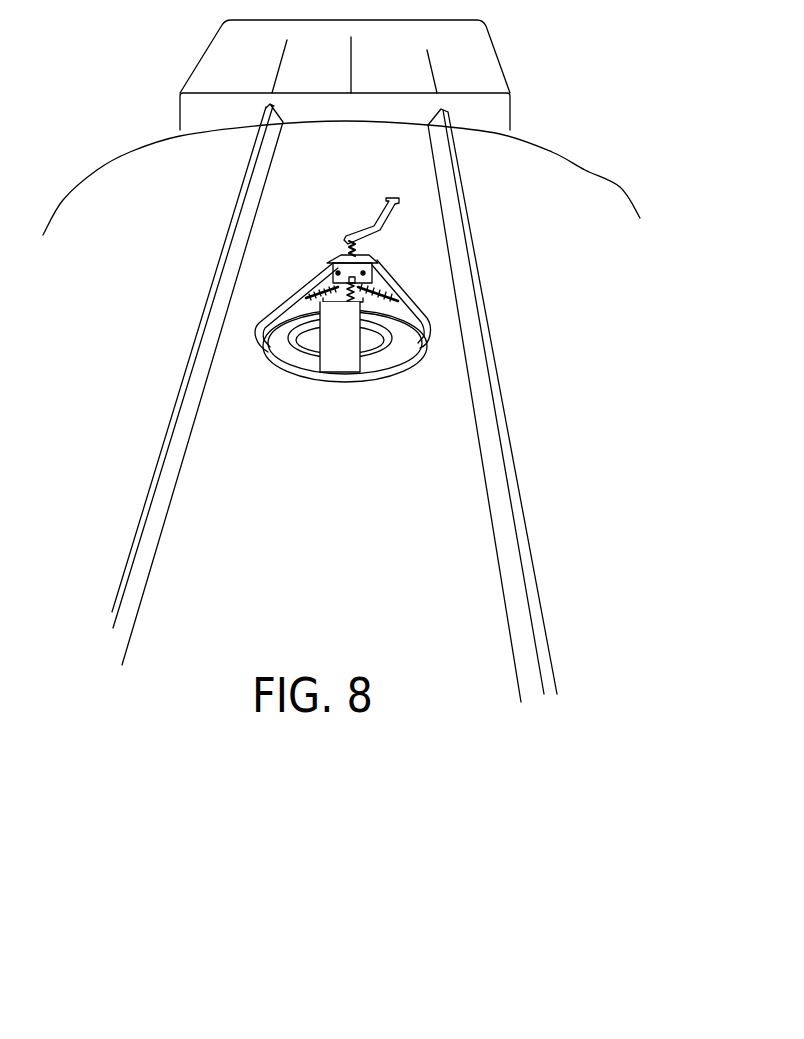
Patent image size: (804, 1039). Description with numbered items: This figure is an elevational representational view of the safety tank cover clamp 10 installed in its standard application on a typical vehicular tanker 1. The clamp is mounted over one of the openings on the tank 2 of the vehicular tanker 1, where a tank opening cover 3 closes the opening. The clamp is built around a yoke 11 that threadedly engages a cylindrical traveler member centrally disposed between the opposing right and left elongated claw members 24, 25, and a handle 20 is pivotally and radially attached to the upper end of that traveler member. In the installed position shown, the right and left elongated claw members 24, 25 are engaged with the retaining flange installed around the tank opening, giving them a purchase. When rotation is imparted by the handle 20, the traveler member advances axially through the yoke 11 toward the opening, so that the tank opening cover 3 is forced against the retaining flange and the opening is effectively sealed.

The vehicular tanker 1 is at (500, 67).
The tank 2 is at (615, 202).
The tank opening cover 3 is at (285, 348).
The safety tank cover clamp 10 is at (348, 190).
The yoke 11 is at (372, 258).
The handle 20 is at (392, 200).
The right elongated claw member 24 is at (412, 306).
The left elongated claw member 25 is at (285, 301).